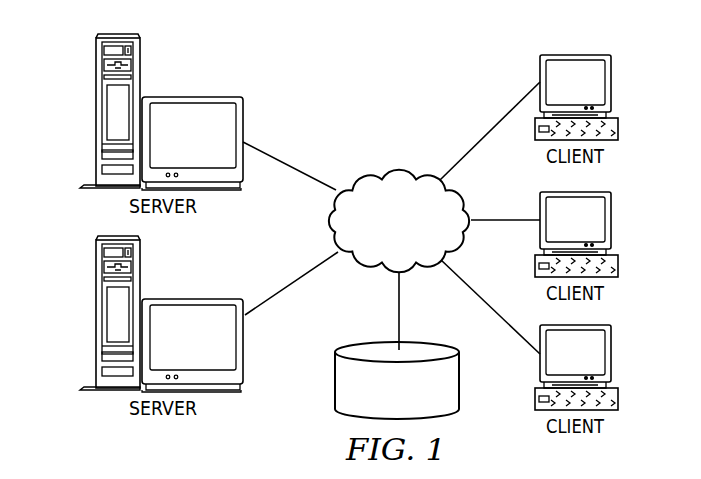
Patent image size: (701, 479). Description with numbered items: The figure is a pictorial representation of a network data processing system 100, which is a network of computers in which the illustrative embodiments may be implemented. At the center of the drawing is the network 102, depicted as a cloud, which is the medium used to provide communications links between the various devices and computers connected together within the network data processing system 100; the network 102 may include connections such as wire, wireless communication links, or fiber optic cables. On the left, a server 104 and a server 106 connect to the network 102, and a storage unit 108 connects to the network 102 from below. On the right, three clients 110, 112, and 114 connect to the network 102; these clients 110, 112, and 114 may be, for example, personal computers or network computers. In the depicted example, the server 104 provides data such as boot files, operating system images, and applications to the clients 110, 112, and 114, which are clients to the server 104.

The network data processing system 100 is at (449, 70).
The network 102 is at (368, 172).
The server 104 is at (92, 112).
The server 106 is at (92, 314).
The storage unit 108 is at (332, 388).
The client 110 is at (608, 81).
The client 112 is at (608, 218).
The client 114 is at (608, 351).